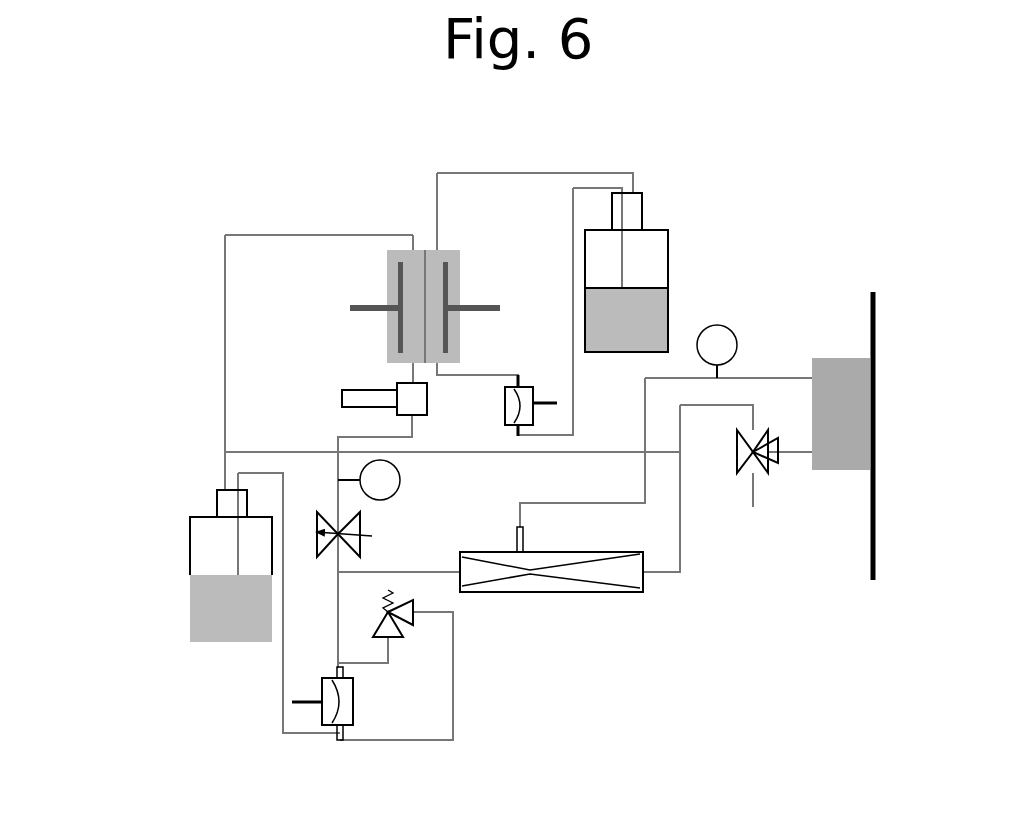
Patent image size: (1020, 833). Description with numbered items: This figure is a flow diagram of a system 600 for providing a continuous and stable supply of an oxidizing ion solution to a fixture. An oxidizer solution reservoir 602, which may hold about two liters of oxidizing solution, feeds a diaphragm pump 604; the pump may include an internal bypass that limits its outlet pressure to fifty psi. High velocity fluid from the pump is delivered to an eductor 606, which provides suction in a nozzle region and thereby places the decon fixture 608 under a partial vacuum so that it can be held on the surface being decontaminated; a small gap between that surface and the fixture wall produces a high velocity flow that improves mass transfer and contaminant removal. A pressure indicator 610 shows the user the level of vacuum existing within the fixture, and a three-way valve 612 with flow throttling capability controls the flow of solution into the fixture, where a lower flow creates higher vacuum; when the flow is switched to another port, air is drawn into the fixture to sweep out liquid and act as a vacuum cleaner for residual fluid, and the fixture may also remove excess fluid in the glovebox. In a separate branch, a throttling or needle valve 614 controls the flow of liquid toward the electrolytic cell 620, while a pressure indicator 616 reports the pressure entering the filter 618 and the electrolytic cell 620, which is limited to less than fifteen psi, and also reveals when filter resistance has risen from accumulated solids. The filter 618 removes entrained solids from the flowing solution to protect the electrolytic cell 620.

The system 600 is at (165, 215).
The oxidizer solution reservoir 602 is at (188, 518).
The diaphragm pump 604 is at (357, 728).
The eductor 606 is at (597, 592).
The decon fixture 608 is at (877, 447).
The pressure indicator 610 is at (728, 320).
The 3-way valve 612 is at (767, 478).
The throttling or needle valve 614 is at (373, 536).
The pressure indicator 616 is at (408, 480).
The filter 618 is at (390, 390).
The electrolytic cell 620 is at (425, 250).